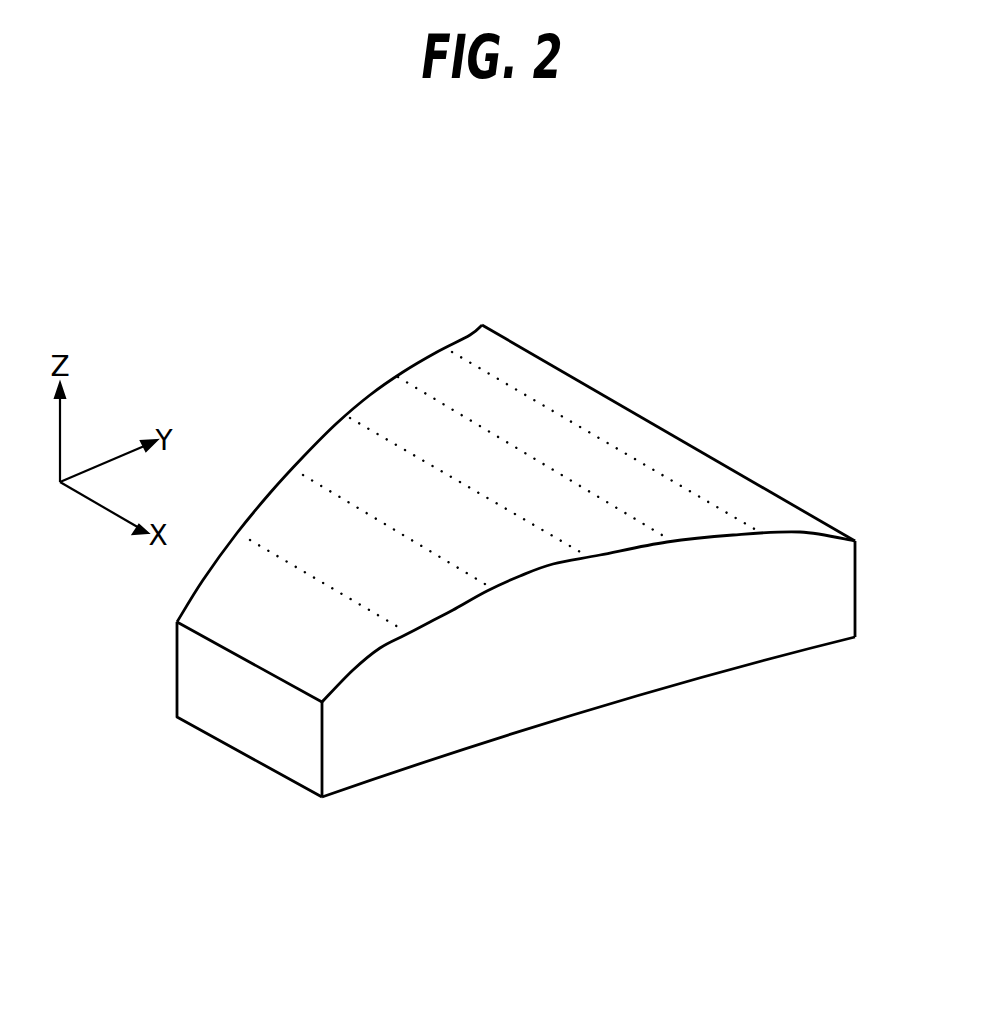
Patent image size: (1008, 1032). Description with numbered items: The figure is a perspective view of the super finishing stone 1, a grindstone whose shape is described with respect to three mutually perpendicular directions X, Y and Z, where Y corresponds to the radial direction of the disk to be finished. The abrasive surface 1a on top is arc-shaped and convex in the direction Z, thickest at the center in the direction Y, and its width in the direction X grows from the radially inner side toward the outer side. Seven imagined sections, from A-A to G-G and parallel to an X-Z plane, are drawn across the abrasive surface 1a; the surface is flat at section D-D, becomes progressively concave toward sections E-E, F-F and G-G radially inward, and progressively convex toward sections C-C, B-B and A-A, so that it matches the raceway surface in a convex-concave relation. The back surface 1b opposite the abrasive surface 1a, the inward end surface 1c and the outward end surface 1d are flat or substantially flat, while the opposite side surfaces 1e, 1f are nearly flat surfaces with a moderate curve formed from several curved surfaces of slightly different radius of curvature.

The super finishing stone 1 is at (573, 287).
The abrasive surface 1a is at (487, 453).
The back surface 1b is at (528, 730).
The inward end surface 1c is at (253, 727).
The outward end surface 1d is at (677, 435).
The side surface 1e is at (320, 442).
The side surface 1f is at (678, 652).